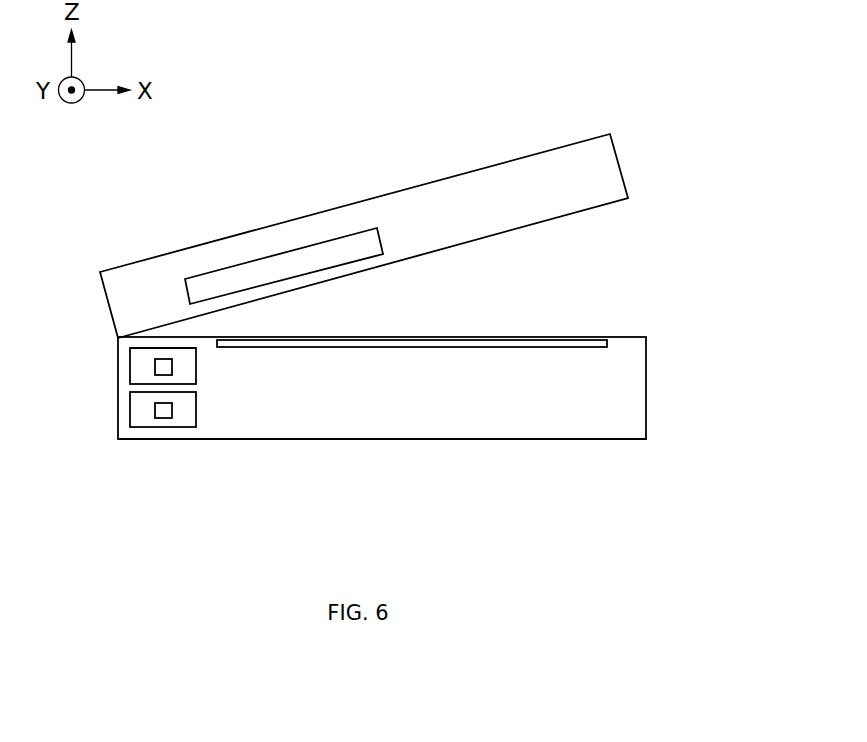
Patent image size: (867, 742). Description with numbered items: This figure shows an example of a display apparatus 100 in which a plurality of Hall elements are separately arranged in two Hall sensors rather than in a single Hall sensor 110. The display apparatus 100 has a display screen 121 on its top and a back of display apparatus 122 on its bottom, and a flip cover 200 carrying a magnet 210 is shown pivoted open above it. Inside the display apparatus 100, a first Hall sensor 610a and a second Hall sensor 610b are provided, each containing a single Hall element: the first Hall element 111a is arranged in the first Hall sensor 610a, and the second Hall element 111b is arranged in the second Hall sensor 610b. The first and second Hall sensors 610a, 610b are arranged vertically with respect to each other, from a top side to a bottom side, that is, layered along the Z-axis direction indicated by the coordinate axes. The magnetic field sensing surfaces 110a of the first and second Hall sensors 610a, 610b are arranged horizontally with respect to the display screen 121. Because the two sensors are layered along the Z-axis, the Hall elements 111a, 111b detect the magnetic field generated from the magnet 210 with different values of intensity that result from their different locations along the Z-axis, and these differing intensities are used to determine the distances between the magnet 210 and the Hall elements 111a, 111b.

The display apparatus 100 is at (637, 491).
The Hall sensor 110 is at (164, 408).
The magnetic field sensing surface 110a is at (160, 348).
The first Hall element 111a is at (155, 367).
The second Hall element 111b is at (155, 410).
The display screen 121 is at (607, 344).
The back of display apparatus 122 is at (385, 440).
The flip cover 200 is at (577, 87).
The magnet 210 is at (285, 253).
The first Hall sensor 610a is at (196, 366).
The second Hall sensor 610b is at (196, 408).